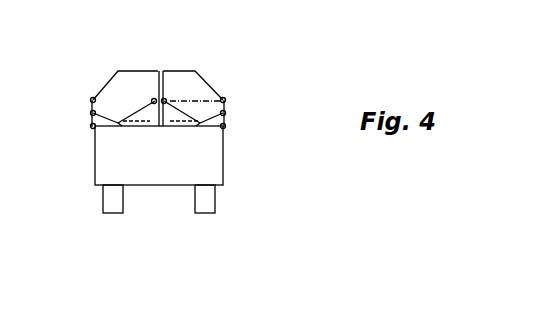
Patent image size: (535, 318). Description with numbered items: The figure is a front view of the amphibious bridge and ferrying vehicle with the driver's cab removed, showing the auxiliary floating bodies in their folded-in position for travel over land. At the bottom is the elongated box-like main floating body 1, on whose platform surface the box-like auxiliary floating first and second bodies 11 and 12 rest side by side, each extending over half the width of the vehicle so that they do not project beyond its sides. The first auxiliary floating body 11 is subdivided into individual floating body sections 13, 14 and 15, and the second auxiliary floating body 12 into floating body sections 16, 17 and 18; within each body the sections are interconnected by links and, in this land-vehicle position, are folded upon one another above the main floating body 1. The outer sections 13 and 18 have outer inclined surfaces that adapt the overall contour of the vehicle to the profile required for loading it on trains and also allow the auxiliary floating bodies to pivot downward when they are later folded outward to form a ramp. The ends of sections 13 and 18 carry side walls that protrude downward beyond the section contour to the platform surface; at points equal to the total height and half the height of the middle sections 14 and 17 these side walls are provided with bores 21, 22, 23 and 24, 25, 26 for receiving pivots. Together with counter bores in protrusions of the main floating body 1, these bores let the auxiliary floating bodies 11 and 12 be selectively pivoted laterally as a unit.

The main floating body 1 is at (165, 185).
The auxiliary floating first body 11 is at (209, 68).
The auxiliary floating second body 12 is at (117, 66).
The floating body section 13 is at (207, 83).
The floating body section 14 is at (172, 121).
The floating body section 15 is at (187, 127).
The floating body section 16 is at (132, 124).
The floating body section 17 is at (147, 121).
The floating body section 18 is at (115, 86).
The bore 21 is at (226, 127).
The bore 22 is at (90, 127).
The bore 23 is at (226, 113).
The bore 24 is at (90, 113).
The bore 25 is at (226, 99).
The bore 26 is at (90, 100).